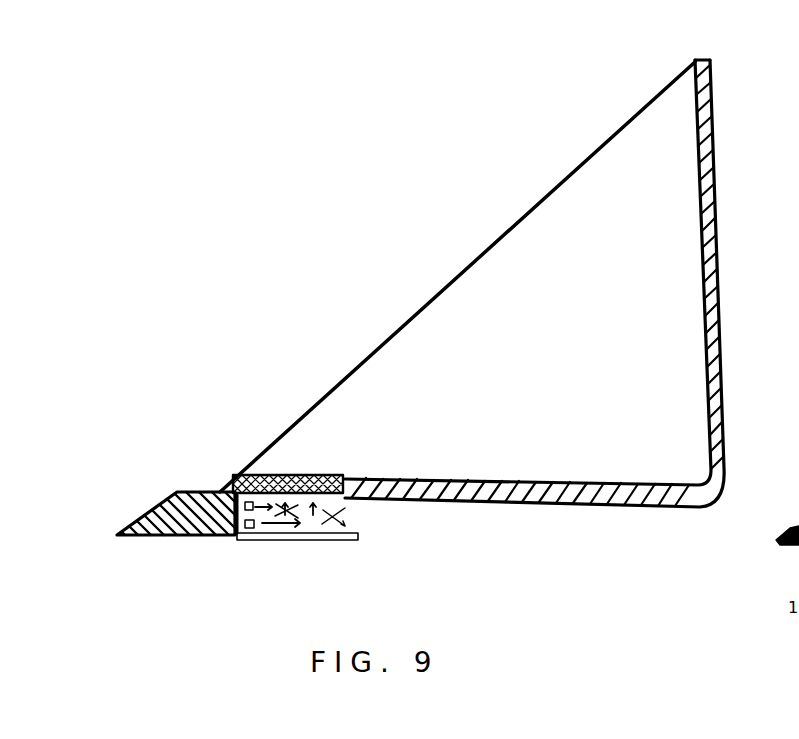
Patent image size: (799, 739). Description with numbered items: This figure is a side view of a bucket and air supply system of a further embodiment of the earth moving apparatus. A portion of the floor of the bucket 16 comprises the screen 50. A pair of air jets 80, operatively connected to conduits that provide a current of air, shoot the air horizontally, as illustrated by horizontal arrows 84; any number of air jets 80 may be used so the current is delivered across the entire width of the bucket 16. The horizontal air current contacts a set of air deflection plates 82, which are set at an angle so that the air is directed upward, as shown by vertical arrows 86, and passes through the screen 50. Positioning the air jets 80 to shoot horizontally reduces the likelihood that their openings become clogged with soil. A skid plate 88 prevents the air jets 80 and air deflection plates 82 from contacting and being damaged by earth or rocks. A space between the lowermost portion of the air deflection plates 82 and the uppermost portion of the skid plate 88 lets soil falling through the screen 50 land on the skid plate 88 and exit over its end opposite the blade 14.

The bucket 16 is at (720, 218).
The blade 14 is at (212, 540).
The screen 50 is at (327, 475).
The vertical arrows 86 is at (306, 522).
The air jets 80 is at (256, 536).
The horizontal arrows 84 is at (275, 540).
The air deflection plates 82 is at (340, 518).
The skid plate 88 is at (298, 541).